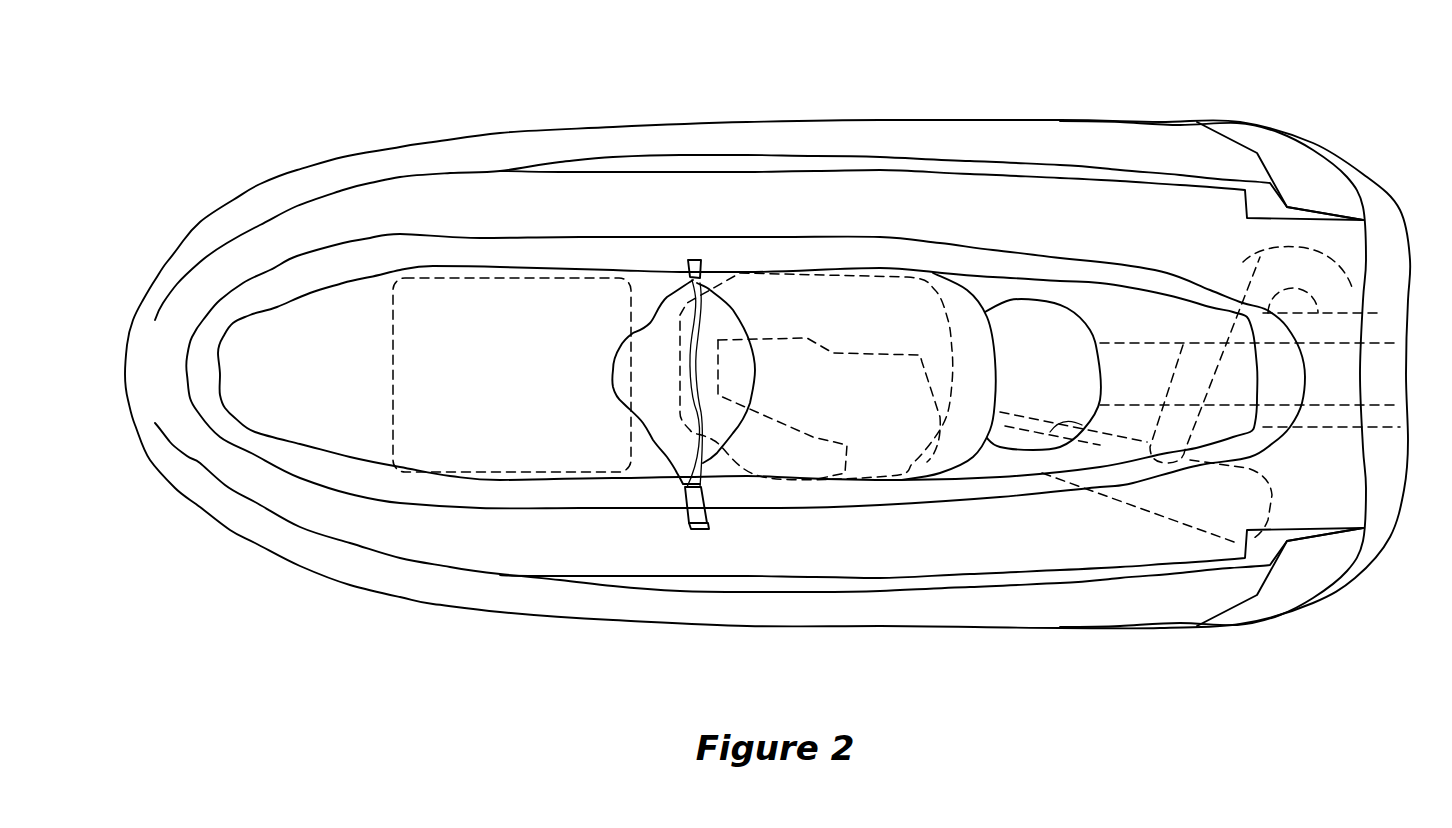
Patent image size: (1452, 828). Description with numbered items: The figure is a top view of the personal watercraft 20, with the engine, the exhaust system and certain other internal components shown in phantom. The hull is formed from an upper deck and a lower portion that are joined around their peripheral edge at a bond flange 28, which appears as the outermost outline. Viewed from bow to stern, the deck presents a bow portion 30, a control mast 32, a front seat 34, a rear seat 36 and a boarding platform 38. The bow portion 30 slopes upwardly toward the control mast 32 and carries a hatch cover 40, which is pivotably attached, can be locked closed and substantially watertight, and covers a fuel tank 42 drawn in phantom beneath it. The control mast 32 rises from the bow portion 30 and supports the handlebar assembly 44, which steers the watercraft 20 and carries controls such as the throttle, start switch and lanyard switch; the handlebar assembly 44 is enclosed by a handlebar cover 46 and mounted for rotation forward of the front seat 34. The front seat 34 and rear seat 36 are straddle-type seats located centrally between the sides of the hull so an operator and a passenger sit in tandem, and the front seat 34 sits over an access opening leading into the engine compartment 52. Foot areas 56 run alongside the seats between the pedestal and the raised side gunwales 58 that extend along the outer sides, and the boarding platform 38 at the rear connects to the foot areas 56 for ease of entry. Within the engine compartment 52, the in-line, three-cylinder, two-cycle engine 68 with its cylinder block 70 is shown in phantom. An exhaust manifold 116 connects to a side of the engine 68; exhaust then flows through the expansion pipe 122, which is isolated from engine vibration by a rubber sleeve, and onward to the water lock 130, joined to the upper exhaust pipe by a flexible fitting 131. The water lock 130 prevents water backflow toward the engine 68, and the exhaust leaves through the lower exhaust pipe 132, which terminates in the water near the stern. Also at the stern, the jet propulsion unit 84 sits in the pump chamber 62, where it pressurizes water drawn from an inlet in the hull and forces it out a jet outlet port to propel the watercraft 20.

The personal watercraft 20 is at (953, 104).
The bond flange 28 is at (508, 612).
The bow portion 30 is at (446, 320).
The control mast 32 is at (642, 285).
The front seat 34 is at (954, 273).
The rear seat 36 is at (1058, 323).
The boarding platform 38 is at (1340, 460).
The hatch cover 40 is at (305, 323).
The fuel tank 42 is at (455, 470).
The handlebar assembly 44 is at (696, 260).
The handlebar cover 46 is at (624, 367).
The engine compartment 52 is at (650, 470).
The foot areas 56 is at (793, 178).
The side gunwales 58 is at (910, 130).
The pump chamber 62 is at (1184, 337).
The engine 68 is at (886, 483).
The cylinder block 70 is at (944, 472).
The jet propulsion unit 84 is at (1240, 393).
The exhaust manifold 116 is at (805, 460).
The expansion pipe 122 is at (837, 297).
The water lock 130 is at (1150, 520).
The flexible fitting 131 is at (1007, 413).
The lower exhaust pipe 132 is at (1310, 257).